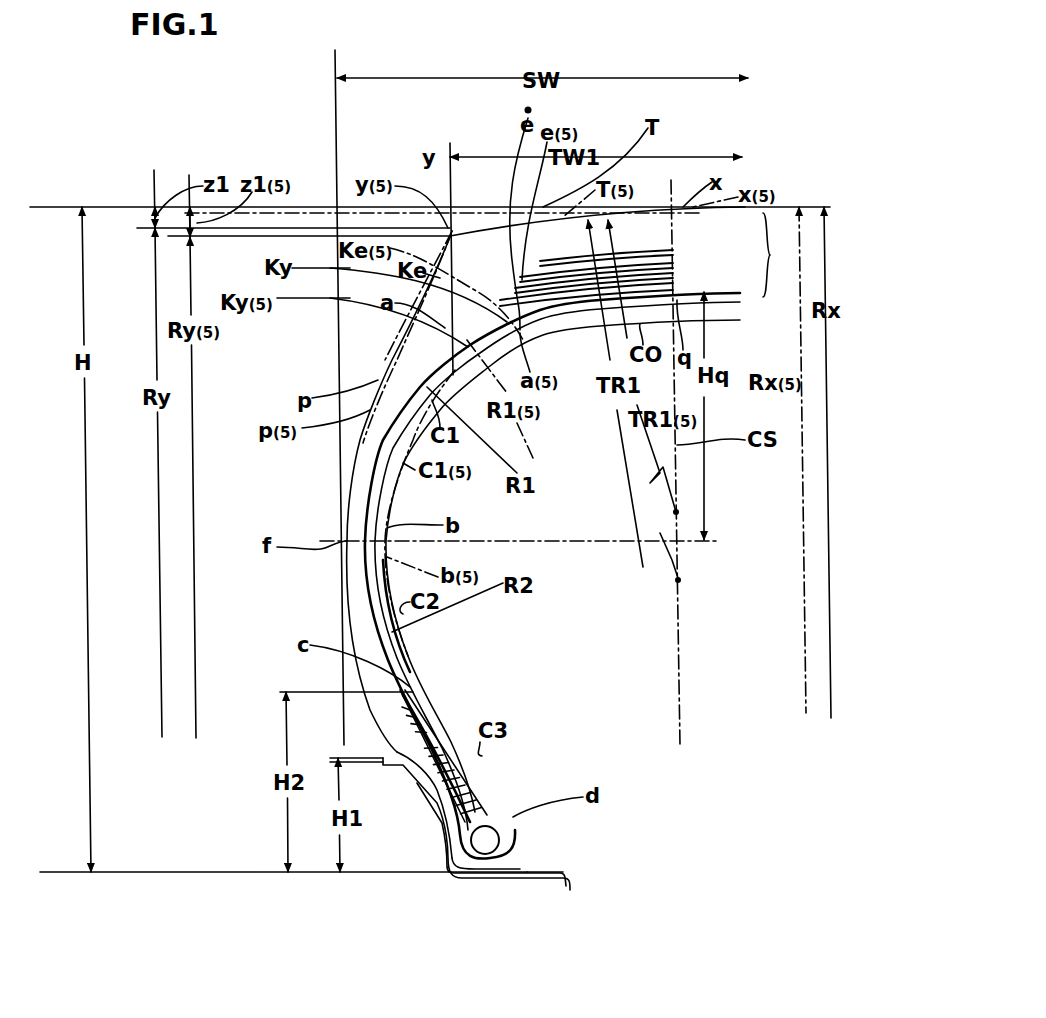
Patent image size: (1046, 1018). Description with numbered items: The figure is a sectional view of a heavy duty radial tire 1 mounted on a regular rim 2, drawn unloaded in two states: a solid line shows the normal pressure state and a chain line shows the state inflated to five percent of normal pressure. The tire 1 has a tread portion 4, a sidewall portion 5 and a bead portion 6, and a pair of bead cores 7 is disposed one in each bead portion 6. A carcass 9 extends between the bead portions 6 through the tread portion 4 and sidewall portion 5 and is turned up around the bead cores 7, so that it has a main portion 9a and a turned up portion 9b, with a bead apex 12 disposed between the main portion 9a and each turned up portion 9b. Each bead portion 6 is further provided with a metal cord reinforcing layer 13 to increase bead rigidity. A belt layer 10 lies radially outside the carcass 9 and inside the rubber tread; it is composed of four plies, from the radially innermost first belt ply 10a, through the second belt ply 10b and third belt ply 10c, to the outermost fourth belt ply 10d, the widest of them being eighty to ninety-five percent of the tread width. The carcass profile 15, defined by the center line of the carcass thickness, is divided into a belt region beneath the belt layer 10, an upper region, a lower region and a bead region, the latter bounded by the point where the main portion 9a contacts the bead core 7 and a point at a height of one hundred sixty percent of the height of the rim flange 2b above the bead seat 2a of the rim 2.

The tire 1 is at (392, 356).
The regular rim 2 is at (453, 873).
The bead seat 2a is at (523, 872).
The rim flange 2b is at (397, 750).
The tread portion 4 is at (493, 188).
The sidewall portion 5 is at (317, 585).
The bead portion 6 is at (423, 788).
The bead core 7 is at (500, 842).
The carcass 9 is at (378, 458).
The carcass main portion 9a is at (497, 783).
The carcass turned up portion 9b is at (397, 672).
The belt layer 10 is at (650, 256).
The first belt ply 10a is at (673, 286).
The second belt ply 10b is at (673, 274).
The third belt ply 10c is at (673, 263).
The fourth belt ply 10d is at (673, 250).
The bead apex 12 is at (480, 777).
The metal cord reinforcing layer 13 is at (493, 862).
The carcass profile 15 is at (365, 437).